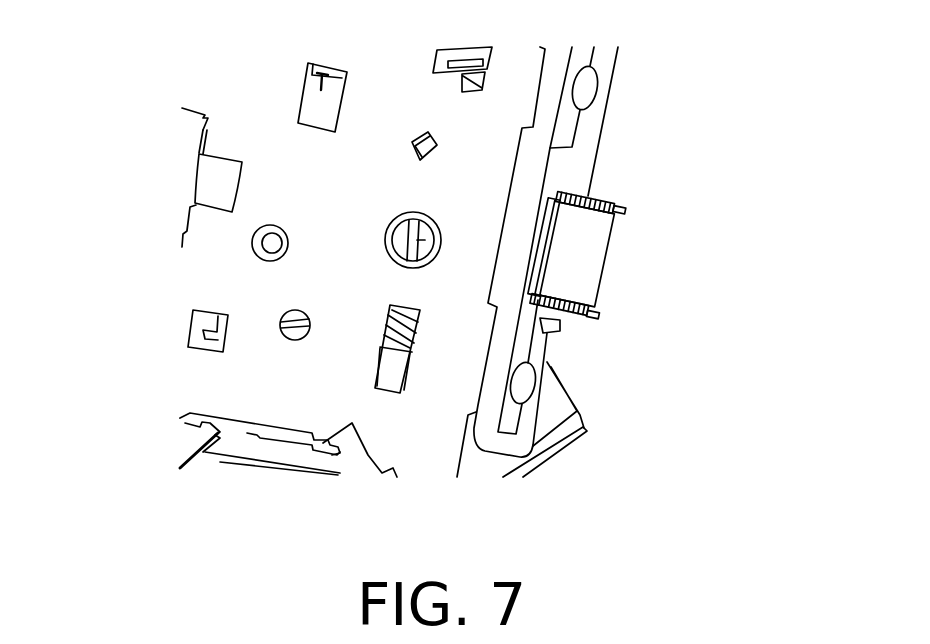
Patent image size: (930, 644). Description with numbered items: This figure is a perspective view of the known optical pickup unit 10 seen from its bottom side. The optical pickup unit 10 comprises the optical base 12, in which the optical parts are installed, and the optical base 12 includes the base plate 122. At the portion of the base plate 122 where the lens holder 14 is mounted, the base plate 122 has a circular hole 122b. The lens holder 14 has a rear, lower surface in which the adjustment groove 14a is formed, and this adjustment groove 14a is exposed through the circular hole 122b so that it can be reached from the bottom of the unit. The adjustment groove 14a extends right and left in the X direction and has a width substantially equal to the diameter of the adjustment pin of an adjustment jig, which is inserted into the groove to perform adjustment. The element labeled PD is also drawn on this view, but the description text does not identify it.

The optical pickup unit 10 is at (613, 357).
The optical base 12 is at (183, 438).
The base plate 122 is at (299, 404).
The circular hole 122b is at (392, 268).
The lens holder 14 is at (392, 243).
The adjustment groove 14a is at (433, 242).
The photodetector connector PD is at (578, 256).